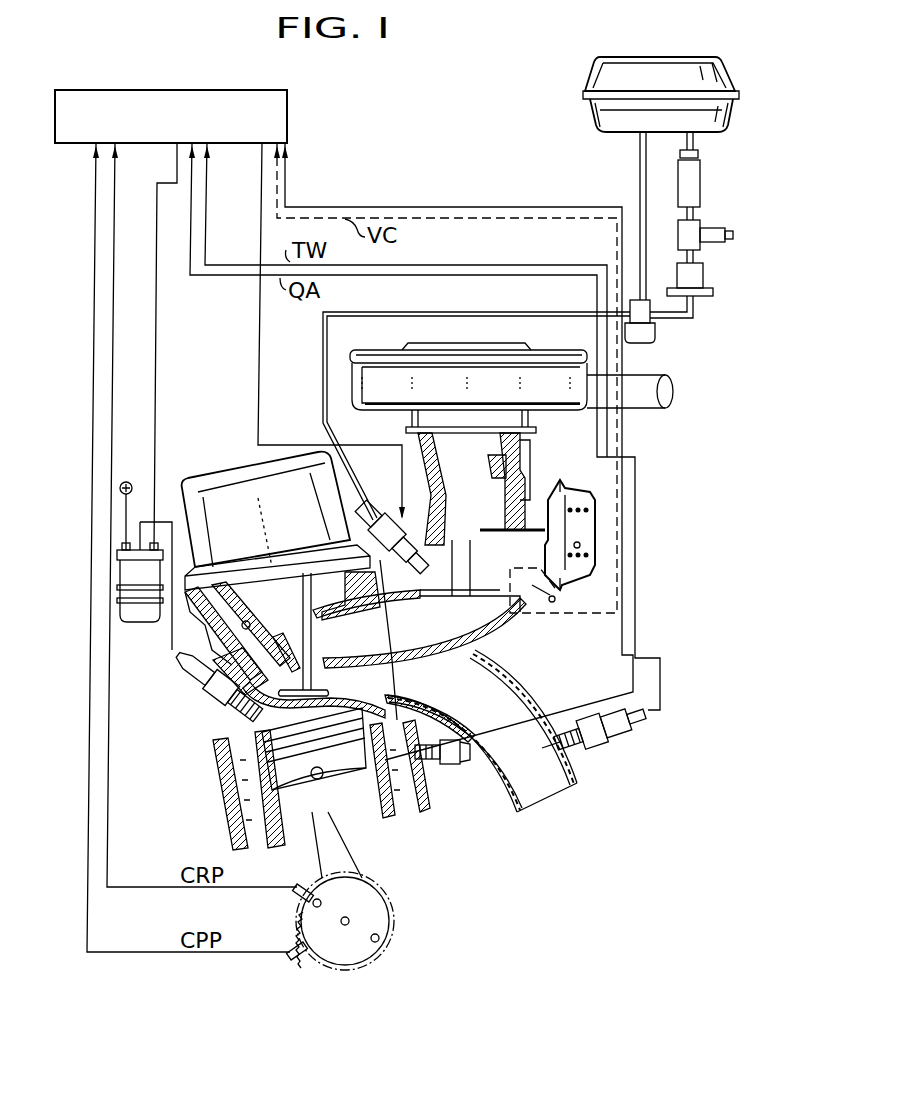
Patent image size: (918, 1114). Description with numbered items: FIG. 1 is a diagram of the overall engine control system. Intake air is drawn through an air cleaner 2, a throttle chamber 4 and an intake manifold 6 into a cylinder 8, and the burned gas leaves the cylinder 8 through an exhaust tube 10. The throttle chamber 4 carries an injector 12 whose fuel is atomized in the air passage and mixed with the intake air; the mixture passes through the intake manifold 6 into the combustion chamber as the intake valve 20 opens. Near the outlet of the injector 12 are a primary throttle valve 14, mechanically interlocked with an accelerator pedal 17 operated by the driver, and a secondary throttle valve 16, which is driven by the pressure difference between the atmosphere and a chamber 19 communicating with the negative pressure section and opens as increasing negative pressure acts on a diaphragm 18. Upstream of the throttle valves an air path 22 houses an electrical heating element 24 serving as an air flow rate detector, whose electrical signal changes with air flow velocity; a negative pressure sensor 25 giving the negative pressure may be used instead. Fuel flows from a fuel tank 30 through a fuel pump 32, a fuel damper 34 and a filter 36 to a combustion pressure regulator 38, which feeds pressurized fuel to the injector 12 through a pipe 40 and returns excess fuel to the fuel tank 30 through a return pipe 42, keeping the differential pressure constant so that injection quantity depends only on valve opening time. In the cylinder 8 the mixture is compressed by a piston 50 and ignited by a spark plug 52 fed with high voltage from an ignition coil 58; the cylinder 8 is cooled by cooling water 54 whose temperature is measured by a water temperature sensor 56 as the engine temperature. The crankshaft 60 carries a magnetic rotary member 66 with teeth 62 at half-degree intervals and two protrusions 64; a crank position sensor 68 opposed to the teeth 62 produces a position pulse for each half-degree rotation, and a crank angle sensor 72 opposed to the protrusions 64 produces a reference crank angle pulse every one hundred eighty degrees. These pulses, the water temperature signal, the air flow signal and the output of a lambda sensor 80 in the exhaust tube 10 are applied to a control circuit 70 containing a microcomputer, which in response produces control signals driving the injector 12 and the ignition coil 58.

The air cleaner 2 is at (545, 350).
The throttle chamber 4 is at (412, 469).
The intake manifold 6 is at (495, 640).
The cylinder 8 is at (210, 788).
The exhaust tube 10 is at (552, 682).
The injector 12 is at (394, 640).
The primary throttle valve 14 is at (410, 510).
The secondary throttle valve 16 is at (460, 580).
The accelerator pedal 17 is at (556, 600).
The diaphragm 18 is at (590, 525).
The chamber 19 is at (580, 520).
The intake valve 20 is at (392, 703).
The air path 22 is at (525, 470).
The electrical heating element 24 is at (532, 440).
The negative pressure sensor 25 is at (505, 625).
The fuel tank 30 is at (587, 80).
The fuel pump 32 is at (700, 185).
The fuel damper 34 is at (678, 237).
The filter 36 is at (705, 278).
The combustion pressure regulator 38 is at (656, 335).
The pipe 40 is at (447, 314).
The return pipe 42 is at (638, 170).
The piston 50 is at (230, 835).
The spark plug 52 is at (215, 713).
The cooling water 54 is at (395, 820).
The water temperature sensor 56 is at (445, 770).
The ignition coil 58 is at (140, 622).
The crankshaft 60 is at (349, 920).
The teeth 62 is at (320, 962).
The protrusions 64 is at (380, 938).
The rotary member 66 is at (365, 967).
The crank position sensor 68 is at (300, 958).
The control circuit 70 is at (288, 124).
The crank angle sensor 72 is at (304, 886).
The lambda sensor 80 is at (598, 760).